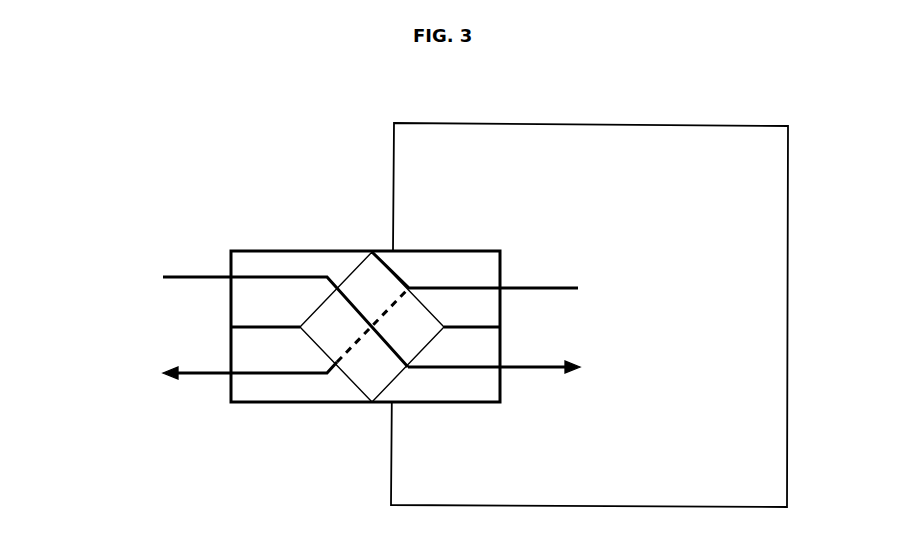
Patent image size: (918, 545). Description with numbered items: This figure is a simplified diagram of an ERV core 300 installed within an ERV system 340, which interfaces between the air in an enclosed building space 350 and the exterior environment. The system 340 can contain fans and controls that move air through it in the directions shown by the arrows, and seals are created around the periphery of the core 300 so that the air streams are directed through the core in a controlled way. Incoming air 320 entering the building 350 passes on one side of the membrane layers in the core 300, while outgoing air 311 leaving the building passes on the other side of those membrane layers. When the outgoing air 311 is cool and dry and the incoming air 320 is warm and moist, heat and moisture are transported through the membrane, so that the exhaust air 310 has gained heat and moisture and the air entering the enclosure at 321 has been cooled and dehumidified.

The ERV core 300 is at (365, 287).
The outgoing air 310 is at (203, 375).
The outgoing air 311 is at (555, 288).
The incoming air 320 is at (180, 275).
The air entering the enclosure 321 is at (533, 371).
The ERV system 340 is at (282, 249).
The enclosed building space 350 is at (787, 250).